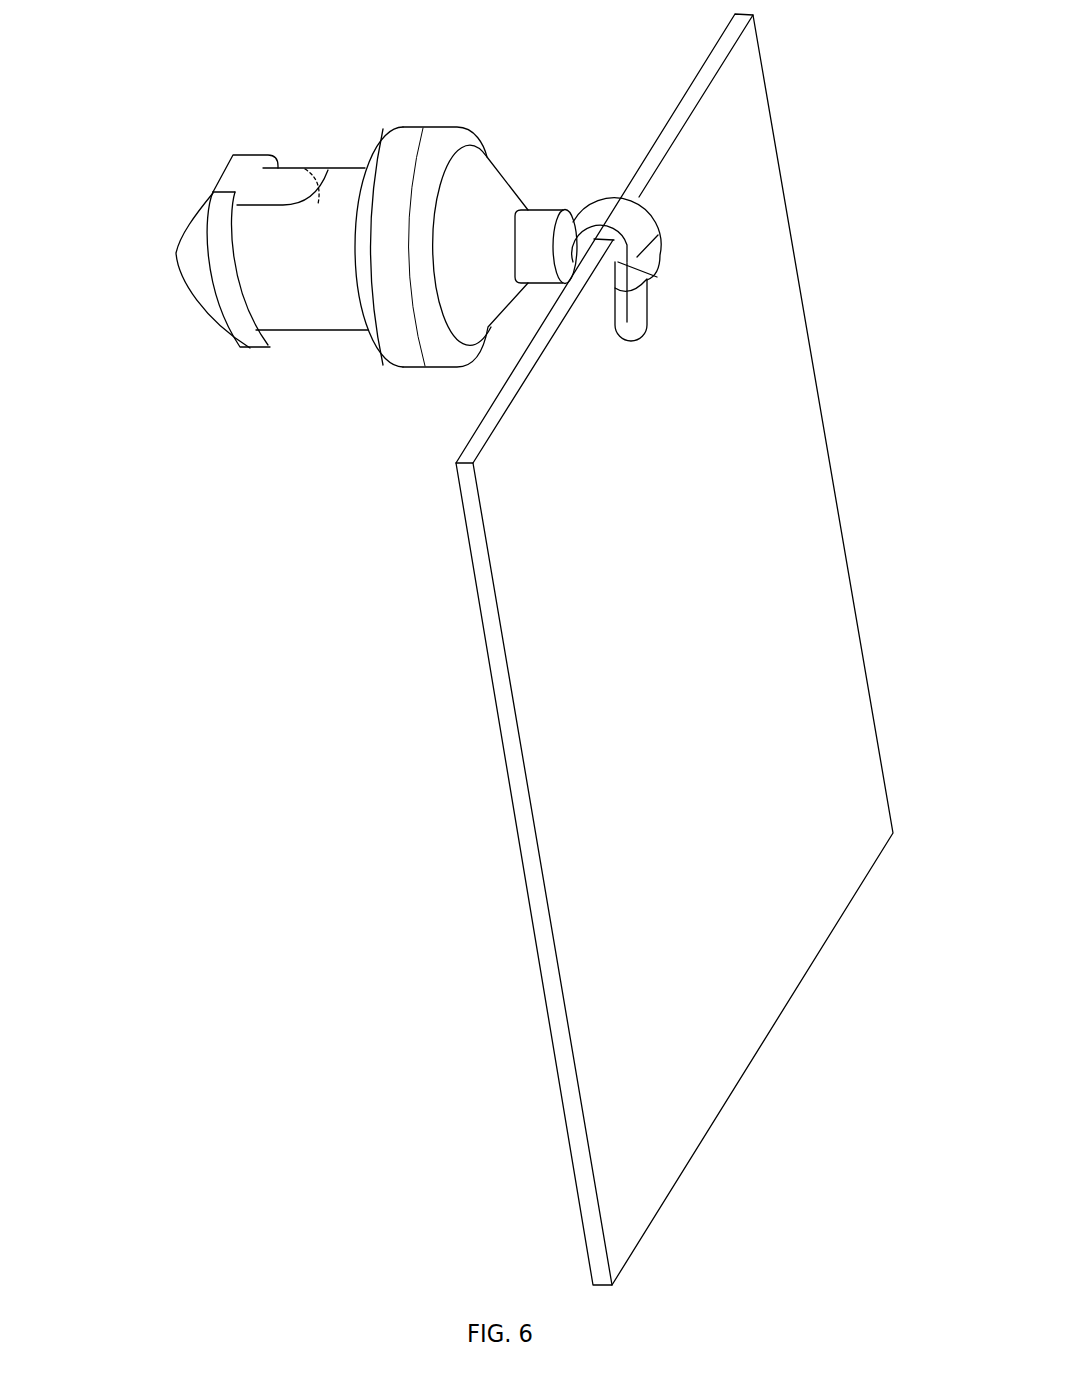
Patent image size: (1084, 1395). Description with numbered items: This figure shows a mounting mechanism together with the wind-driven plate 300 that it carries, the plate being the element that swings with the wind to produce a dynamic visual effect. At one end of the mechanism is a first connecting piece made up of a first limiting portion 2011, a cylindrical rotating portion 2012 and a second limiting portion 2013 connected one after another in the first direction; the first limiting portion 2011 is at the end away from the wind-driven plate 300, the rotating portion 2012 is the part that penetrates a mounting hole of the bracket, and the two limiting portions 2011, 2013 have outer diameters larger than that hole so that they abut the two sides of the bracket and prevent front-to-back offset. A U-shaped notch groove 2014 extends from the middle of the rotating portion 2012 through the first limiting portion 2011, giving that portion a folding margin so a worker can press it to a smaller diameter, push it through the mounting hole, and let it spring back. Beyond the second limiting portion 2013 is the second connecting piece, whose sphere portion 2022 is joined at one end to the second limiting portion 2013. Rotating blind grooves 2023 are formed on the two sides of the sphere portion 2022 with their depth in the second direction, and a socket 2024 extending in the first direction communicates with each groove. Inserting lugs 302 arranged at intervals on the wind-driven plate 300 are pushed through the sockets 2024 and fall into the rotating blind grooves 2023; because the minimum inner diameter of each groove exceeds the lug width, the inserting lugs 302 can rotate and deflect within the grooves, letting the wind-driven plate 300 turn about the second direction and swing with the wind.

The wind-driven plate 300 is at (487, 572).
The inserting lug 302 is at (615, 262).
The first limiting portion 2011 is at (220, 278).
The rotating portion 2012 is at (315, 297).
The second limiting portion 2013 is at (410, 352).
The notch groove 2014 is at (270, 187).
The sphere portion 2022 is at (637, 219).
The rotating blind groove 2023 is at (585, 235).
The socket 2024 is at (640, 262).